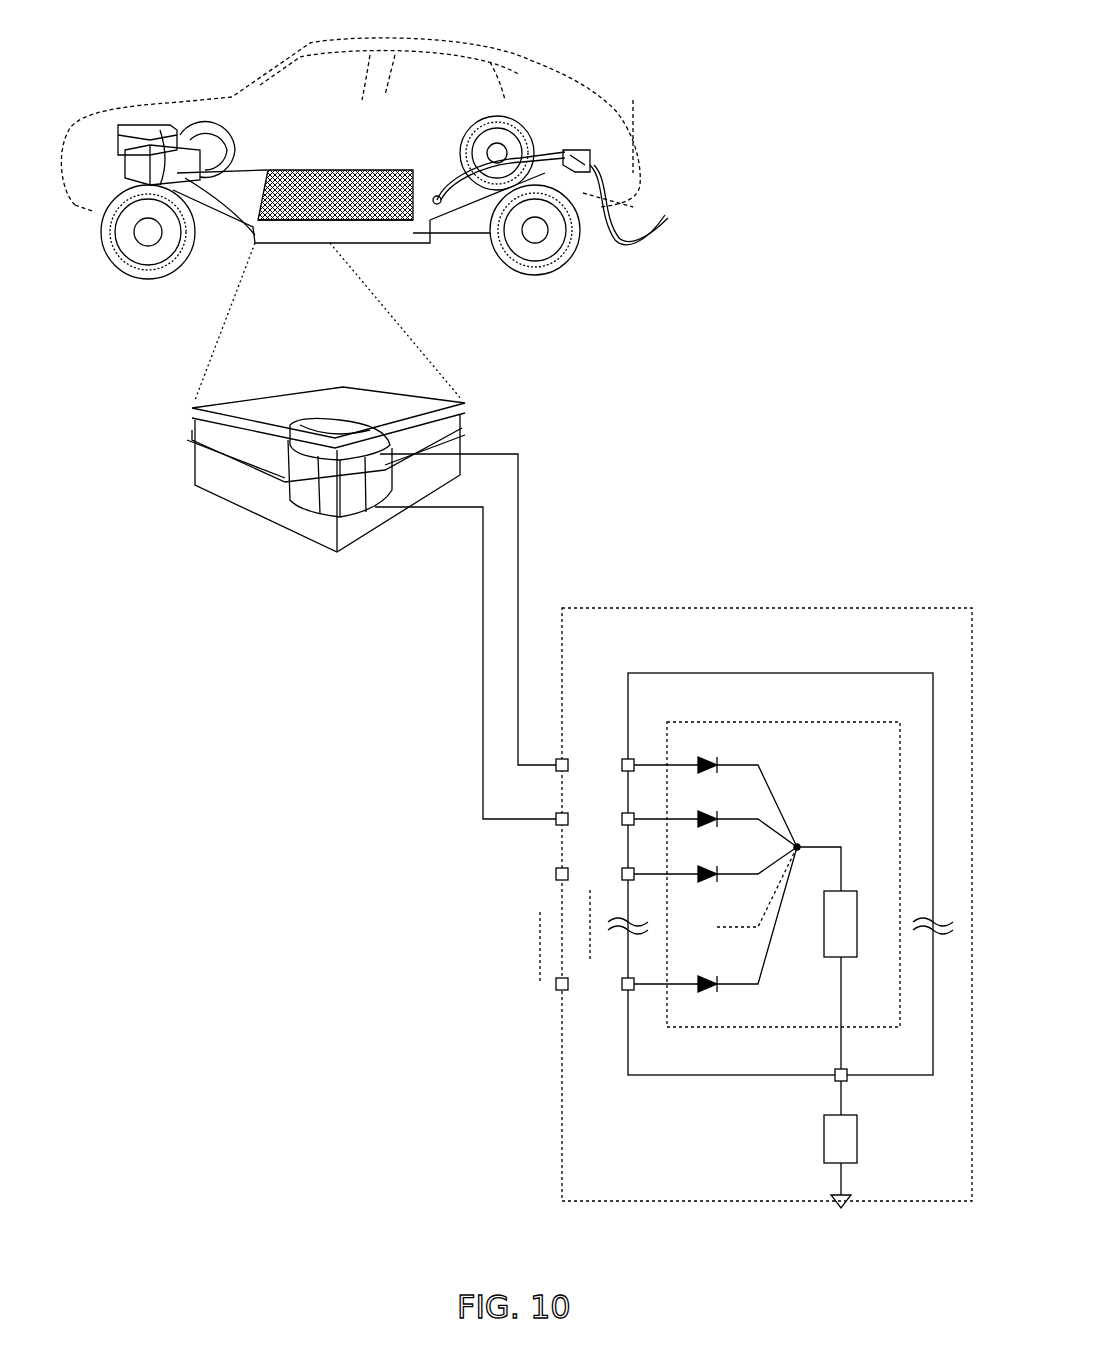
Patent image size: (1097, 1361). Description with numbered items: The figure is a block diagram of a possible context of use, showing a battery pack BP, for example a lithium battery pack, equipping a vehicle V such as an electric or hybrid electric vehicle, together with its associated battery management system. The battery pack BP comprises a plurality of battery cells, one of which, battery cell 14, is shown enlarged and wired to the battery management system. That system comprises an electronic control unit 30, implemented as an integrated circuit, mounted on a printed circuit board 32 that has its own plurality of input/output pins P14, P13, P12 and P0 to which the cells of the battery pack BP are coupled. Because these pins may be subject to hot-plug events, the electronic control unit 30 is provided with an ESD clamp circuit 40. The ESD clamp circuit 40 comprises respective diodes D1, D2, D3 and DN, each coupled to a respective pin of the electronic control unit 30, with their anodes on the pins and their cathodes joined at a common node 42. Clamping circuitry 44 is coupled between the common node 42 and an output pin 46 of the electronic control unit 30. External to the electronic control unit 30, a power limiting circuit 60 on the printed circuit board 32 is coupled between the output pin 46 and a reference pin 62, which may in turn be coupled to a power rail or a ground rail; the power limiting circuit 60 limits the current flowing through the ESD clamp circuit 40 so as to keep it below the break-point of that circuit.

The vehicle V is at (268, 62).
The battery pack BP is at (357, 162).
The battery cell 14 is at (243, 527).
The electronic control unit 30 is at (728, 677).
The printed circuit board 32 is at (877, 608).
The ESD clamp circuit 40 is at (805, 722).
The common node 42 is at (800, 845).
The clamping circuitry 44 is at (847, 920).
The output pin 46 is at (840, 1072).
The power limiting circuit 60 is at (850, 1150).
The reference pin 62 is at (835, 1197).
The diode D1 is at (715, 793).
The diode D2 is at (715, 820).
The diode D3 is at (715, 864).
The diode DN is at (715, 919).
The input/output pin P14 is at (576, 780).
The input/output pin P13 is at (576, 834).
The input/output pin P12 is at (576, 887).
The input/output pin P0 is at (581, 998).